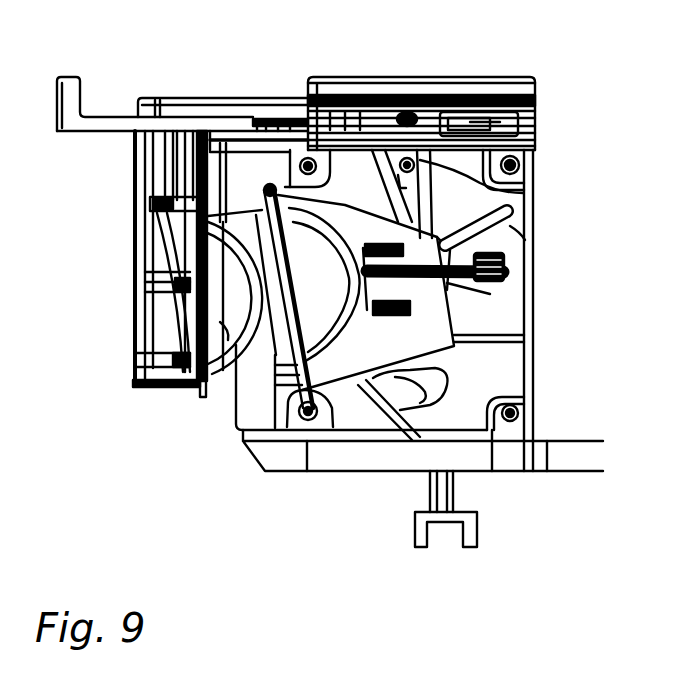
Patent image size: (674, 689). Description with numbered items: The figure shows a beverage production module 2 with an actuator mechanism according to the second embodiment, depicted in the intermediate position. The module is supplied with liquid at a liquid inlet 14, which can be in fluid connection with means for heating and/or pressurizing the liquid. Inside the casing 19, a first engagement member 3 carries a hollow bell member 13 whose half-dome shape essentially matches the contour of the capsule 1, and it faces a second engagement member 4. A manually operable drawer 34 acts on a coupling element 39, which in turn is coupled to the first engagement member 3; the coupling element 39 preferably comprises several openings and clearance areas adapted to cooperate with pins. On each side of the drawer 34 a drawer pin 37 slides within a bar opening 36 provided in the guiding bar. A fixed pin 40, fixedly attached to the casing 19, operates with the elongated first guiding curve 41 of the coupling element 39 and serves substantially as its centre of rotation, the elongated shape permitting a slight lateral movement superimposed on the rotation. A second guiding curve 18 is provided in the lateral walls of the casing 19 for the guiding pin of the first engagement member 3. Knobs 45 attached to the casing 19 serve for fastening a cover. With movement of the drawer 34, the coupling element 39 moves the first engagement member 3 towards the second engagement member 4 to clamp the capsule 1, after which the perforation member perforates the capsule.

The beverage production module 2 is at (568, 44).
The drawer 34 is at (103, 122).
The bar opening 36 is at (538, 108).
The drawer pin 37 is at (432, 112).
The first guiding curve 41 is at (397, 113).
The fixed pin 40 is at (533, 198).
The casing 19 is at (531, 371).
The knobs 45 is at (531, 409).
The first engagement member 3 is at (526, 336).
The liquid inlet 14 is at (511, 267).
The second guiding curve 18 is at (523, 236).
The hollow bell member 13 is at (290, 400).
The capsule 1 is at (224, 380).
The second engagement member 4 is at (165, 392).
The coupling element 39 is at (413, 437).